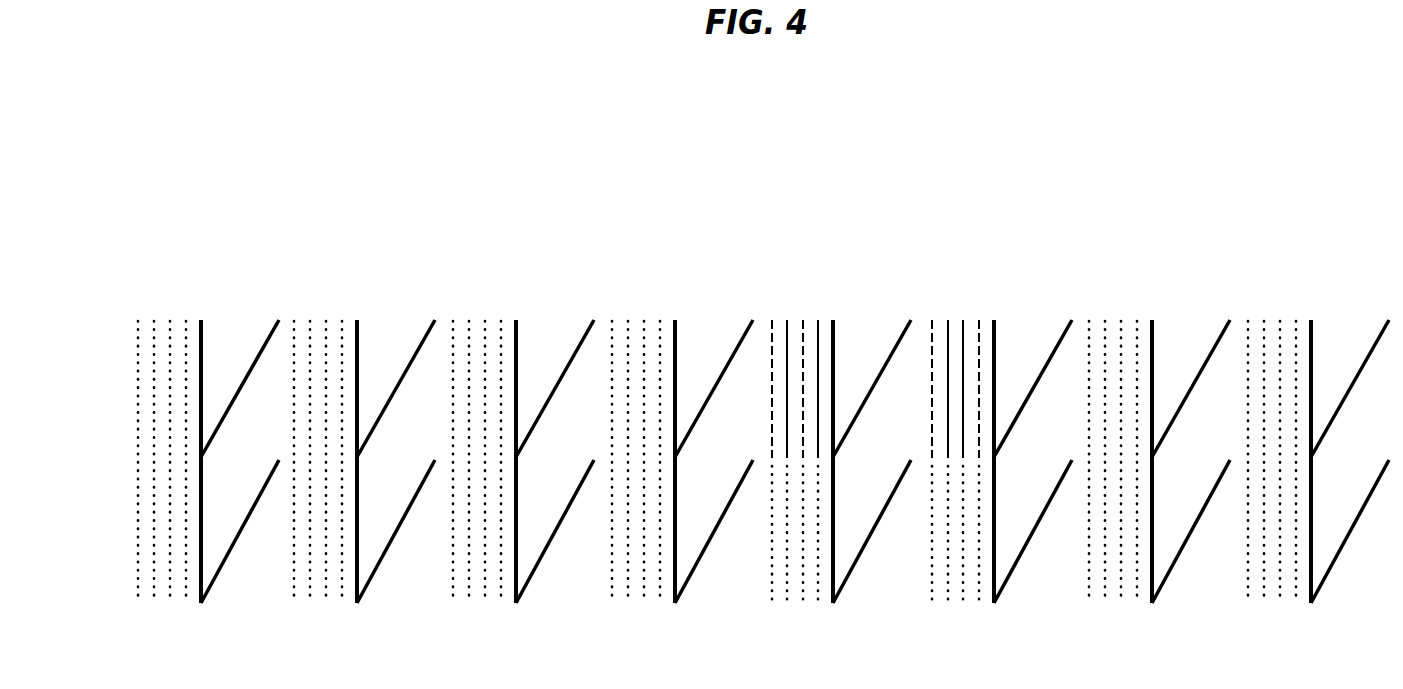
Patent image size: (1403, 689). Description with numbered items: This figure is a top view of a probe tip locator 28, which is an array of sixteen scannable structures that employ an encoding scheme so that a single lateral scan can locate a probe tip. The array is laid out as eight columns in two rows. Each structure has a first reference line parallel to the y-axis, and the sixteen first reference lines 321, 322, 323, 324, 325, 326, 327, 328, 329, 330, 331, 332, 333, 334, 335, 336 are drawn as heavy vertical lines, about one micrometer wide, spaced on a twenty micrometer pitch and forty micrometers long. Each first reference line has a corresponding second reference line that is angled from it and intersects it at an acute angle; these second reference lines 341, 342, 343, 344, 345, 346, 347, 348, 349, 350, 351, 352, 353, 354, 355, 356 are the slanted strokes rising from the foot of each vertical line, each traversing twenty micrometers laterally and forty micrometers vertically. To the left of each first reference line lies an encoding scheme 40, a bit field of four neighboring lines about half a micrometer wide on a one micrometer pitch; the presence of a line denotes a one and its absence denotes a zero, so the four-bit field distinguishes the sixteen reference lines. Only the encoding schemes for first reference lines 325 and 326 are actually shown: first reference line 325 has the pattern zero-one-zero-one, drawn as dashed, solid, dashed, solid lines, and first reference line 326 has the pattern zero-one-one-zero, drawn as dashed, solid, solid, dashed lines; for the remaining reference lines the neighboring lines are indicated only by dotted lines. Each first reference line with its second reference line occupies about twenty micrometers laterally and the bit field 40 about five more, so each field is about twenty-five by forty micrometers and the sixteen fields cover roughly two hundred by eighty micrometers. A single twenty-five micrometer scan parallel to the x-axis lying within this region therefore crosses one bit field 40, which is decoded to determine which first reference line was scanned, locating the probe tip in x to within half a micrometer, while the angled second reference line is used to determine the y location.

The probe tip locator 28 is at (1181, 215).
The encoding scheme 40 is at (819, 313).
The first reference line 321 is at (201, 340).
The first reference line 322 is at (357, 340).
The first reference line 323 is at (516, 340).
The first reference line 324 is at (675, 340).
The first reference line 325 is at (833, 340).
The first reference line 326 is at (994, 340).
The first reference line 327 is at (1152, 340).
The first reference line 328 is at (1311, 340).
The first reference line 329 is at (201, 480).
The first reference line 330 is at (357, 480).
The first reference line 331 is at (516, 480).
The first reference line 332 is at (675, 480).
The first reference line 333 is at (833, 480).
The first reference line 334 is at (994, 480).
The first reference line 335 is at (1152, 480).
The first reference line 336 is at (1311, 480).
The second reference line 341 is at (245, 383).
The second reference line 342 is at (401, 383).
The second reference line 343 is at (560, 383).
The second reference line 344 is at (719, 383).
The second reference line 345 is at (877, 383).
The second reference line 346 is at (1038, 383).
The second reference line 347 is at (1196, 383).
The second reference line 348 is at (1355, 383).
The second reference line 349 is at (217, 576).
The second reference line 350 is at (373, 576).
The second reference line 351 is at (532, 576).
The second reference line 352 is at (691, 576).
The second reference line 353 is at (849, 576).
The second reference line 354 is at (1010, 576).
The second reference line 355 is at (1168, 576).
The second reference line 356 is at (1327, 576).